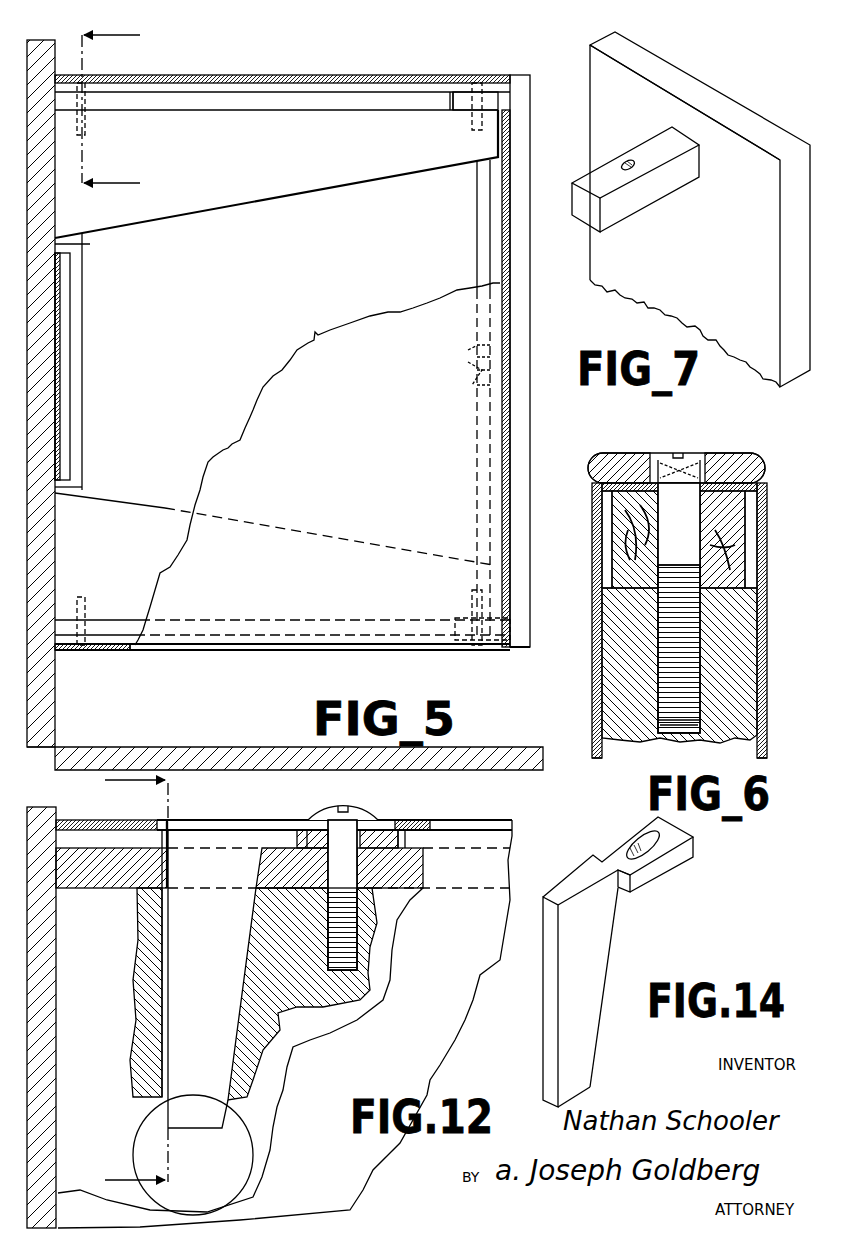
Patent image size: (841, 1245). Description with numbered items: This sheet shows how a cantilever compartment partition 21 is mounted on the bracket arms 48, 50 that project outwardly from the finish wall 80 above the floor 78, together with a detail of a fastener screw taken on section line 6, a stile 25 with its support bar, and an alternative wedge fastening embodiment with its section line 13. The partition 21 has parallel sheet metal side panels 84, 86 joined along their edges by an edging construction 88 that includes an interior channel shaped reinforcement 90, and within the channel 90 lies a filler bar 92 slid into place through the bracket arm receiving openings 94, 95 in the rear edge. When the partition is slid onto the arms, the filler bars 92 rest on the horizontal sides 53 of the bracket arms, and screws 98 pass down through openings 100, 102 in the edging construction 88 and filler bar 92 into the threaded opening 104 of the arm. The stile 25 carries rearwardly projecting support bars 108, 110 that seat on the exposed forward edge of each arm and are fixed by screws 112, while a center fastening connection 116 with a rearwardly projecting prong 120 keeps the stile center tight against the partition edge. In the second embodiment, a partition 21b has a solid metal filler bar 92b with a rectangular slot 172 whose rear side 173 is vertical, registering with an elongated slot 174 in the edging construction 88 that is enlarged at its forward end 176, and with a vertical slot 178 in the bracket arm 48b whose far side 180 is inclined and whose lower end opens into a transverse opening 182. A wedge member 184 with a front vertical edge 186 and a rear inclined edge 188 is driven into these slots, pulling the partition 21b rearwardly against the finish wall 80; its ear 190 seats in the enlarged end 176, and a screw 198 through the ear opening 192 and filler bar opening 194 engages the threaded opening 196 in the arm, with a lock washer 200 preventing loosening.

In FIG. 5, the section line 6- 6 is at (119, 109).
In FIG. 12, the section line 13- 13 is at (123, 979).
In FIG. 5, the compartment partition 21 is at (262, 655).
In FIG. 6, the compartment partition 21 is at (590, 715).
In FIG. 12, the partition 21b is at (440, 1017).
In FIG. 5, the stile 25 is at (525, 118).
In FIG. 7, the stile 25 is at (752, 107).
In FIG. 5, the bracket arm 48 is at (300, 183).
In FIG. 6, the bracket arm 48 is at (630, 672).
In FIG. 12, the bracket arm 48b is at (320, 1025).
In FIG. 5, the bracket arm 50 is at (165, 510).
In FIG. 5, the horizontal side of bracket arm 53 is at (320, 118).
In FIG. 12, the horizontal side of bracket arm 53 is at (300, 900).
In FIG. 5, the floor 78 is at (165, 745).
In FIG. 5, the finish wall 80 is at (55, 715).
In FIG. 12, the finish wall 80 is at (58, 810).
In FIG. 5, the side panel 84 is at (462, 258).
In FIG. 6, the side panel 84 is at (592, 648).
In FIG. 5, the side panel 86 is at (275, 375).
In FIG. 6, the side panel 86 is at (767, 650).
In FIG. 5, the edging construction 88 is at (290, 75).
In FIG. 6, the edging construction 88 is at (627, 475).
In FIG. 12, the edging construction 88 is at (128, 830).
In FIG. 5, the channel shaped reinforcement 90 is at (485, 213).
In FIG. 6, the channel shaped reinforcement 90 is at (606, 570).
In FIG. 5, the filler bar 92 is at (210, 95).
In FIG. 6, the filler bar 92 is at (628, 540).
In FIG. 12, the filler bar 92b is at (92, 870).
In FIG. 5, the bracket arm receiving opening 94 is at (70, 245).
In FIG. 5, the bracket arm receiving opening 95 is at (62, 488).
In FIG. 5, the screw 98 is at (85, 78).
In FIG. 6, the screw 98 is at (735, 548).
In FIG. 6, the opening in edging construction 100 is at (707, 452).
In FIG. 6, the opening in filler bar 102 is at (742, 510).
In FIG. 6, the threaded opening 104 is at (690, 725).
In FIG. 5, the support bar 108 is at (498, 100).
In FIG. 7, the support bar 108 is at (645, 193).
In FIG. 5, the support bar 110 is at (500, 663).
In FIG. 5, the screw 112 is at (478, 76).
In FIG. 5, the center fastening connection 116 is at (470, 345).
In FIG. 5, the prong 120 is at (470, 365).
In FIG. 12, the rectangular slot 172 is at (262, 868).
In FIG. 12, the rear side of slot 173 is at (170, 870).
In FIG. 12, the elongated slot 174 is at (195, 825).
In FIG. 12, the enlarged end of slot 176 is at (430, 822).
In FIG. 12, the vertical slot 178 is at (136, 1045).
In FIG. 12, the inclined side of slot 180 is at (265, 1010).
In FIG. 12, the transverse opening 182 is at (235, 1158).
In FIG. 12, the wedge member 184 is at (180, 1000).
In FIG. 14, the wedge member 184 is at (580, 1025).
In FIG. 12, the front vertical edge of wedge 186 is at (168, 960).
In FIG. 14, the front vertical edge of wedge 186 is at (545, 1003).
In FIG. 12, the rear inclined edge of wedge 188 is at (250, 990).
In FIG. 14, the rear inclined edge of wedge 188 is at (605, 955).
In FIG. 12, the ear 190 is at (395, 838).
In FIG. 14, the ear 190 is at (665, 865).
In FIG. 12, the screw receiving opening 192 is at (380, 830).
In FIG. 14, the screw receiving opening 192 is at (636, 835).
In FIG. 12, the screw receiving opening 194 is at (385, 890).
In FIG. 12, the threaded screw receiving opening 196 is at (372, 935).
In FIG. 12, the screw 198 is at (340, 840).
In FIG. 12, the lock washer 200 is at (315, 815).